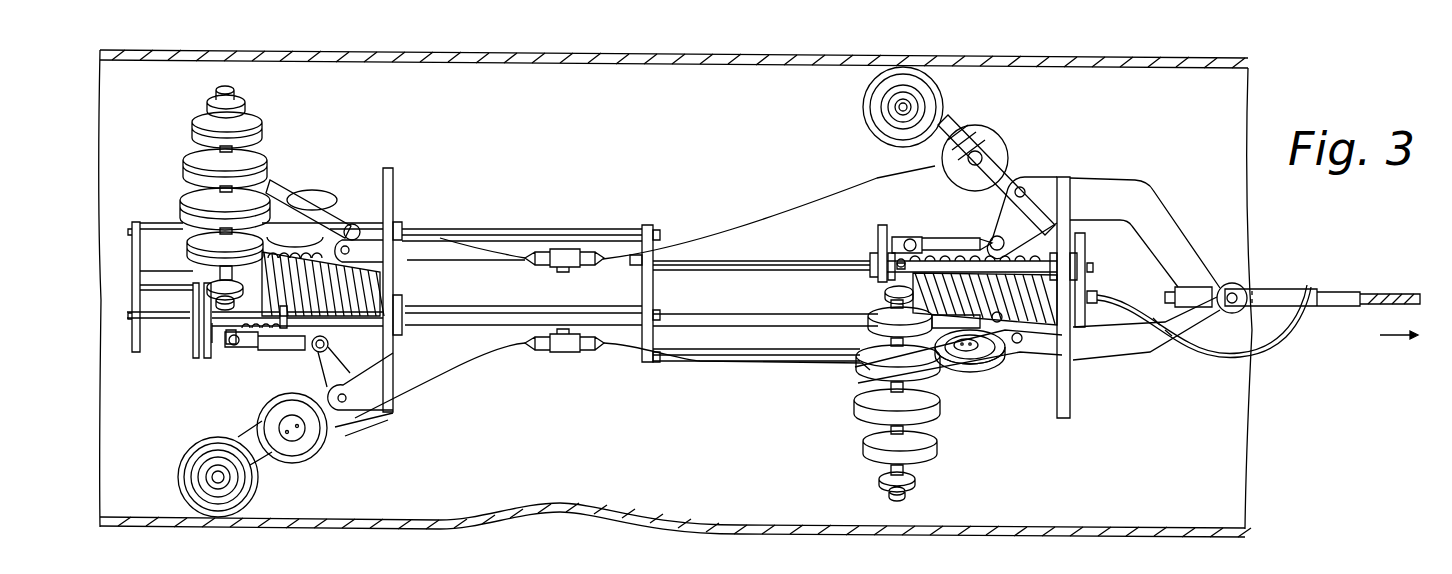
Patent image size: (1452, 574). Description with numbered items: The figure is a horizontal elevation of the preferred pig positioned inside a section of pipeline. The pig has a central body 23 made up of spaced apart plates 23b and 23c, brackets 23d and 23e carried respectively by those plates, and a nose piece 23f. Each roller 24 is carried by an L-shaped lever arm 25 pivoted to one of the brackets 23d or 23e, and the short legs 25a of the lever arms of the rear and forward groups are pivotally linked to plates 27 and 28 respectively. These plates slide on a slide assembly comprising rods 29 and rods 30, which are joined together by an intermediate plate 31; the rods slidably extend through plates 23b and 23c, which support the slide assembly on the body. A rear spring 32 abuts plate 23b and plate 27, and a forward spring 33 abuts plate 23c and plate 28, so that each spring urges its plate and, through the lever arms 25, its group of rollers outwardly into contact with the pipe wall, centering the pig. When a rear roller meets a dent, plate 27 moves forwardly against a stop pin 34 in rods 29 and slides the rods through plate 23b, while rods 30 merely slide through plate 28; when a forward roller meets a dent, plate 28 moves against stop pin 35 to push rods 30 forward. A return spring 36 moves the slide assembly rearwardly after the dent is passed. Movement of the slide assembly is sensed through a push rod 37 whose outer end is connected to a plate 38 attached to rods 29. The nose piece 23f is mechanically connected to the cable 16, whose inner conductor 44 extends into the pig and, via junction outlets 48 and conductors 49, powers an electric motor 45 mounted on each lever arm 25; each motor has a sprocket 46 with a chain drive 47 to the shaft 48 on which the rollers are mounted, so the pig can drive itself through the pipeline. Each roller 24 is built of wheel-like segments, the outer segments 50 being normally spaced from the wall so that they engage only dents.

The cable 16 is at (1385, 288).
The central body 23 is at (501, 265).
The plate 23b is at (393, 168).
The plate 23c is at (1068, 178).
The bracket 23d is at (370, 248).
The bracket 23e is at (1045, 185).
The nose piece 23f is at (1158, 222).
The roller 24 is at (952, 423).
The L-shaped lever arm 25 is at (302, 210).
The short leg 25a is at (323, 368).
The plate 27 is at (198, 355).
The plate 28 is at (880, 228).
The rods 29 is at (487, 228).
The rods 30 is at (757, 361).
The intermediate plate 31 is at (645, 224).
The rear spring 32 is at (360, 290).
The forward spring 33 is at (1020, 256).
The stop pin 34 is at (258, 350).
The stop pin 35 is at (902, 259).
The return spring 36 is at (340, 308).
The push rod 37 is at (154, 285).
The plate 38 is at (135, 222).
The conductor 44 is at (1215, 360).
The electric motor 45 is at (1008, 147).
The sprocket 46 is at (985, 150).
The chain drive 47 is at (952, 133).
The shaft 48 is at (560, 358).
The conductors 49 is at (708, 238).
The outer segments 50 is at (207, 103).